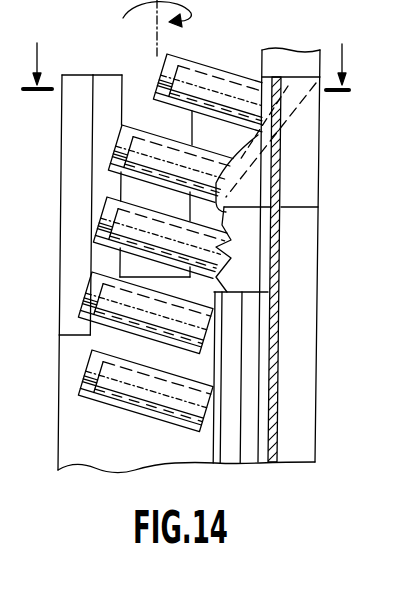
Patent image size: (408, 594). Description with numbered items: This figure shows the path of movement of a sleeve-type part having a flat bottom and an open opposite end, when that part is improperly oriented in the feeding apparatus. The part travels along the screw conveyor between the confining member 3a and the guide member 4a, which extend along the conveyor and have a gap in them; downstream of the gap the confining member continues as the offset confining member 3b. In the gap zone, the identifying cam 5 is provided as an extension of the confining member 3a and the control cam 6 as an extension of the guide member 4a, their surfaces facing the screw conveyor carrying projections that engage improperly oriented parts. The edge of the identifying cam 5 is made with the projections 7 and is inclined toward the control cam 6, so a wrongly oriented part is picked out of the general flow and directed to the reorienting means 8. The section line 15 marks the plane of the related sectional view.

The confining member 3a is at (83, 430).
The confining member 3b is at (276, 332).
The guide member 4a is at (231, 445).
The identifying cam 5 is at (254, 262).
The control cam 6 is at (107, 90).
The projections 7 is at (75, 147).
The reorienting means 8 is at (301, 157).
The section line 15- 15 is at (190, 47).